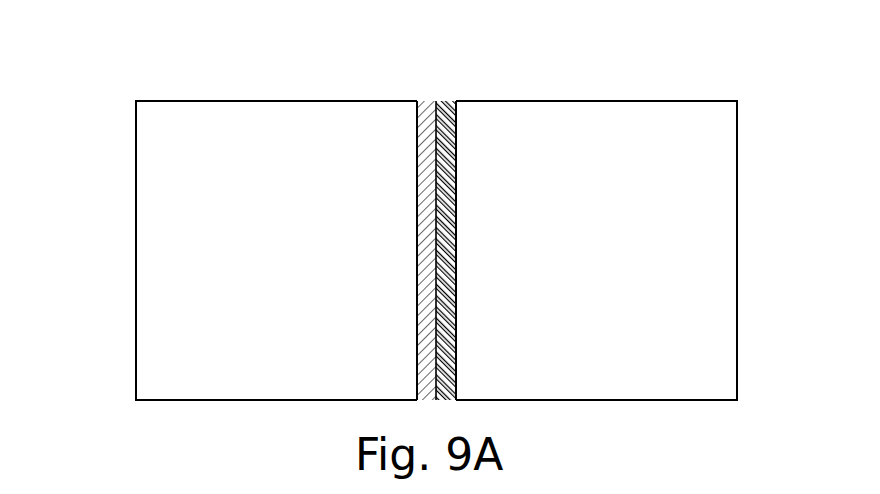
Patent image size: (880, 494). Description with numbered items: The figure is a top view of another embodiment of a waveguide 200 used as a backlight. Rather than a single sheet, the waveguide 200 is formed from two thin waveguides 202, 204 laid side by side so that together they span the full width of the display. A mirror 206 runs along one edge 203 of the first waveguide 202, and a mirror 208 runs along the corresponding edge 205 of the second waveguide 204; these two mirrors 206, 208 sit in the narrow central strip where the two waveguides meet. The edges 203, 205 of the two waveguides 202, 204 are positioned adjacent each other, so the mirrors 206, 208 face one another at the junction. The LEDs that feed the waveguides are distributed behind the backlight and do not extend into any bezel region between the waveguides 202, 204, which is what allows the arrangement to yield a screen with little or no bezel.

The waveguide 200 is at (148, 58).
The thin waveguide 202 is at (136, 266).
The edge 203 is at (438, 250).
The thin waveguide 204 is at (737, 184).
The edge 205 is at (437, 258).
The mirror 206 is at (418, 239).
The mirror 208 is at (456, 156).